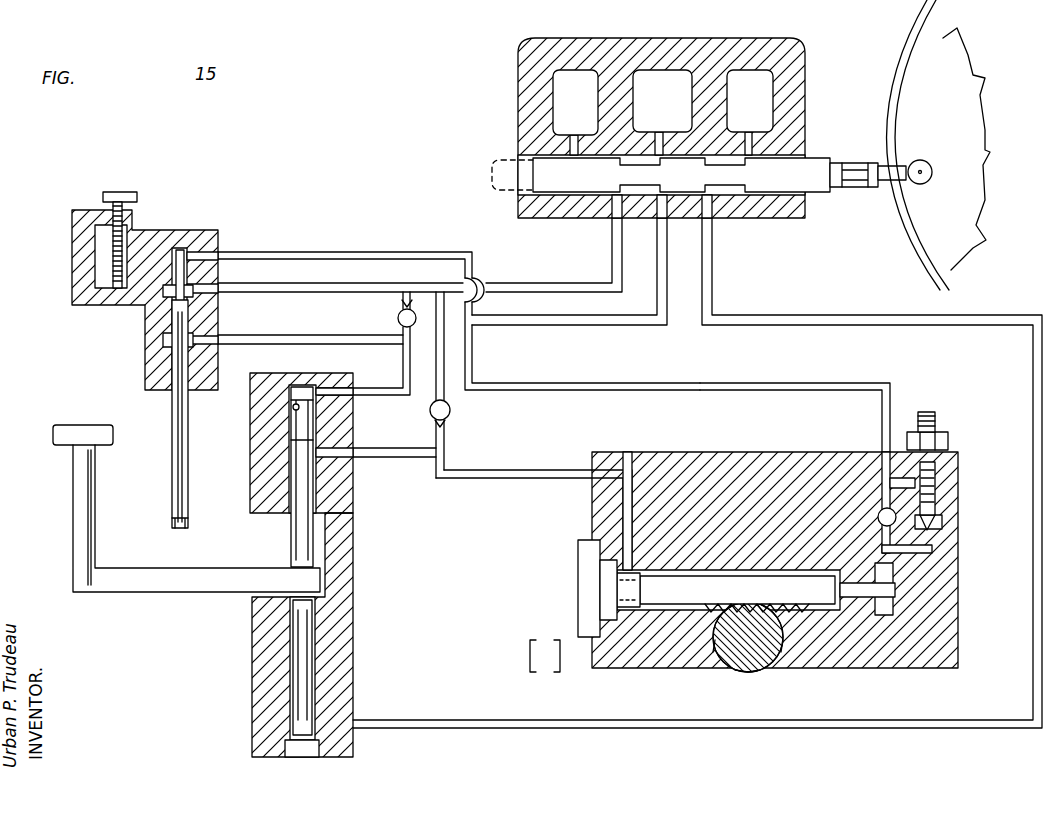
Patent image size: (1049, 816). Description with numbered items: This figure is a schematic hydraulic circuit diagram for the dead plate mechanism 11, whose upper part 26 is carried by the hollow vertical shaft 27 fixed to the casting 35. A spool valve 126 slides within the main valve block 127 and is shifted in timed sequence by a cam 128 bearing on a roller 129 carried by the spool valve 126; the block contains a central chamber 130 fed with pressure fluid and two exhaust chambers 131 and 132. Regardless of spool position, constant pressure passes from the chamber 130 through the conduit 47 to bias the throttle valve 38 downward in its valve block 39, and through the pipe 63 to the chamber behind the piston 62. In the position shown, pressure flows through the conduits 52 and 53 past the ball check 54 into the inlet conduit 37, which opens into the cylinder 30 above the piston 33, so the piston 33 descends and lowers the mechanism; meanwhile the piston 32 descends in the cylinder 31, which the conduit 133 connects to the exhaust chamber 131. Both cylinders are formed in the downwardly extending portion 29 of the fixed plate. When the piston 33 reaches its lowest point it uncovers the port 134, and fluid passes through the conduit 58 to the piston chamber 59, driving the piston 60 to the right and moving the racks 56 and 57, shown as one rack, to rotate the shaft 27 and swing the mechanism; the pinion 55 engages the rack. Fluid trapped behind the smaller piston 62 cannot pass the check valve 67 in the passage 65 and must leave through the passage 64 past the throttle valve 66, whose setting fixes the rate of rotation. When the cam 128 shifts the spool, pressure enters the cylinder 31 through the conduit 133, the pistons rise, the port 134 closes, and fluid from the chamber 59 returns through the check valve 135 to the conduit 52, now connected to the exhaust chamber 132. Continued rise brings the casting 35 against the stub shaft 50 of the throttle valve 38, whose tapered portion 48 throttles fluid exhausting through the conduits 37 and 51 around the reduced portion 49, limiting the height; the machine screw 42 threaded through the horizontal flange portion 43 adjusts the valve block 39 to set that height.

The dead plate mechanism 11 is at (143, 613).
The upper part of the dead plate mechanism 26 is at (62, 440).
The hollow vertical shaft 27 is at (75, 540).
The downwardly extending portion of the fixed plate 29 is at (340, 580).
The cylinder 30 is at (290, 407).
The cylinder 31 is at (293, 750).
The piston 32 is at (300, 637).
The piston 33 is at (298, 494).
The casting 35 is at (705, 452).
The inlet conduit 37 is at (372, 392).
The adjustable throttle valve 38 is at (198, 445).
The valve block 39 is at (222, 242).
The machine screw 42 is at (125, 200).
The horizontal flange portion 43 is at (105, 248).
The conduit 47 is at (283, 254).
The tapered portion 48 is at (165, 332).
The reduced portion 49 is at (180, 310).
The stub shaft 50 is at (182, 522).
The passage 51 is at (290, 341).
The conduit 52 is at (250, 291).
The branch passage 53 is at (404, 294).
The check valve 54 is at (398, 318).
The pinion 55 is at (752, 640).
The rack 56 is at (690, 600).
The rack 57 is at (545, 657).
The conduit 58 is at (522, 465).
The piston chamber 59 is at (578, 600).
The piston 60 is at (580, 575).
The piston 62 is at (895, 590).
The pipe 63 is at (885, 400).
The passage 64 is at (942, 514).
The passage 65 is at (888, 486).
The throttle valve 66 is at (932, 466).
The check valve 67 is at (877, 517).
The spool valve 126 is at (858, 190).
The main valve block 127 is at (800, 135).
The cam 128 is at (960, 135).
The roller 129 is at (908, 182).
The central chamber 130 is at (636, 103).
The exhaust chamber 131 is at (790, 80).
The exhaust chamber 132 is at (575, 95).
The conduit 133 is at (590, 729).
The port 134 is at (322, 448).
The check valve 135 is at (452, 410).